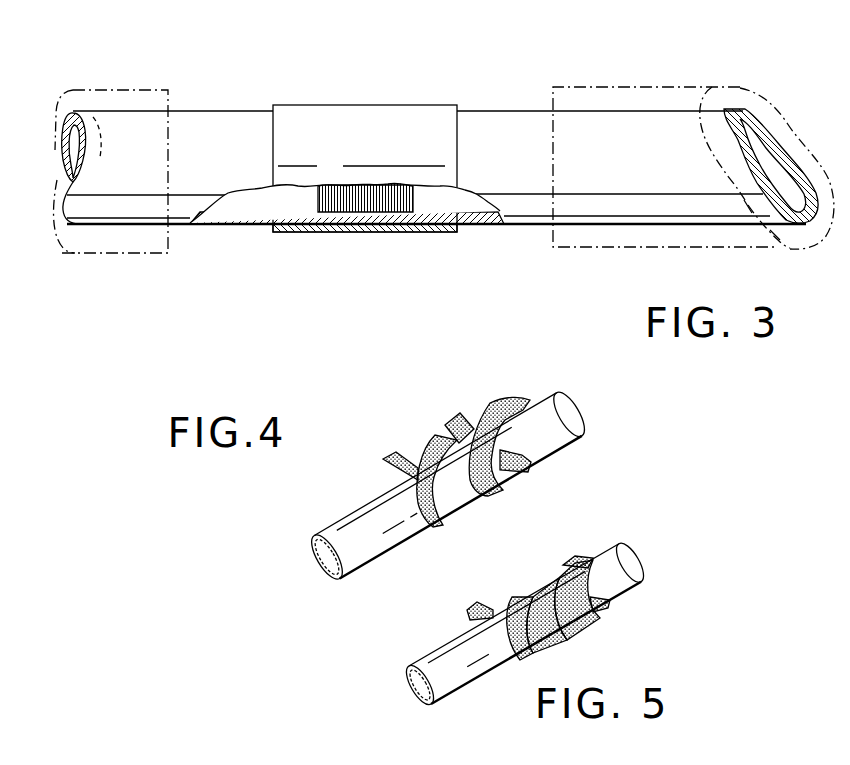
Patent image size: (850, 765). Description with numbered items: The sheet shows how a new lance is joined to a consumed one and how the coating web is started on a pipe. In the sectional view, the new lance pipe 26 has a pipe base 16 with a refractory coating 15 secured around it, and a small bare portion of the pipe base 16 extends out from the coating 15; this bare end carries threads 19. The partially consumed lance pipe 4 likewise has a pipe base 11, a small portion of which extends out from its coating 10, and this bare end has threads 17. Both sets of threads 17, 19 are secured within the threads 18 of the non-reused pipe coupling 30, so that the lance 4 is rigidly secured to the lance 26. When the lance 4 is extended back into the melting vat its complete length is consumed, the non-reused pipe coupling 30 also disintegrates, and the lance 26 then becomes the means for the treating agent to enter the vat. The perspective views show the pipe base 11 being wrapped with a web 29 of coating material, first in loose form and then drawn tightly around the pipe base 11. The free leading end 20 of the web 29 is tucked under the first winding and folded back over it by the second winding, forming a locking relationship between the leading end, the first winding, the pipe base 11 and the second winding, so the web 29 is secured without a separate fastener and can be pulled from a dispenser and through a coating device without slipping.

In FIG. 3, the lance pipe 4 is at (675, 70).
In FIG. 3, the coating 10 is at (583, 86).
In FIG. 3, the pipe base 11 is at (516, 110).
In FIG. 4, the pipe base 11 is at (332, 524).
In FIG. 5, the pipe base 11 is at (422, 665).
In FIG. 3, the refractory coating 15 is at (154, 90).
In FIG. 3, the pipe base 16 is at (241, 111).
In FIG. 3, the threads 17 is at (432, 225).
In FIG. 3, the threads 18 is at (380, 217).
In FIG. 3, the threads 19 is at (300, 225).
In FIG. 4, the free leading end 20 is at (460, 413).
In FIG. 5, the free leading end 20 is at (565, 590).
In FIG. 3, the new lance pipe 26 is at (120, 78).
In FIG. 4, the web of coating material 29 is at (423, 440).
In FIG. 5, the web of coating material 29 is at (511, 597).
In FIG. 3, the non-reused pipe coupling 30 is at (386, 105).